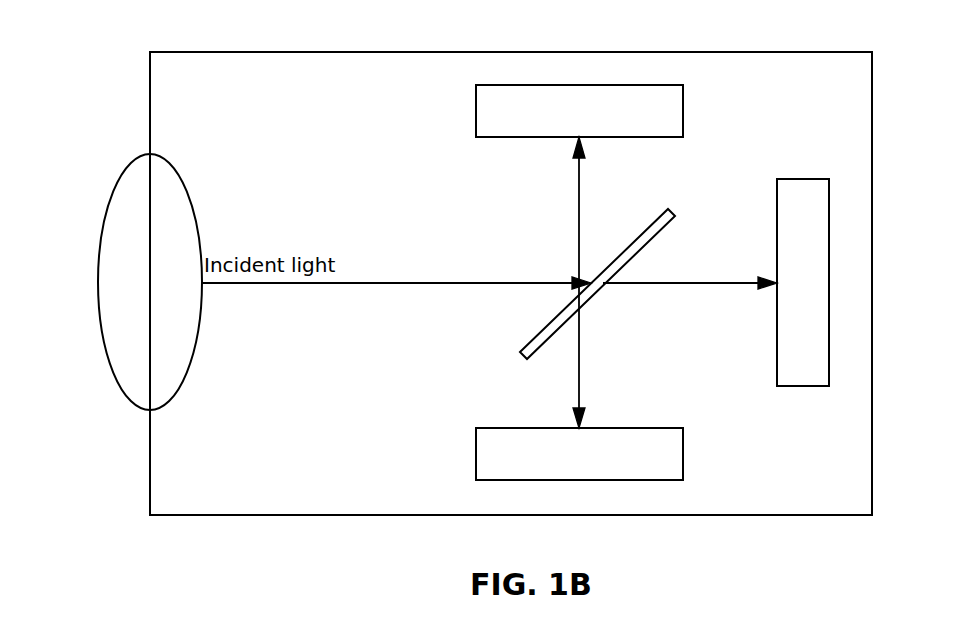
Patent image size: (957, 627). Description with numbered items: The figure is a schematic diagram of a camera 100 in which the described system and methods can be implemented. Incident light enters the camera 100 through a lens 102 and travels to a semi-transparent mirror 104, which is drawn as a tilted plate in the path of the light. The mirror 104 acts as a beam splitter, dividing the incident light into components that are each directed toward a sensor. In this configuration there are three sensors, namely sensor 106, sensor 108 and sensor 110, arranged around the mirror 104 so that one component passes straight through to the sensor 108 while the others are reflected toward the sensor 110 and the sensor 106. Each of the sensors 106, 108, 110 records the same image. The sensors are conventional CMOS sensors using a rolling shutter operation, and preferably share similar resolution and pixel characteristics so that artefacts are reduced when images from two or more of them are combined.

The camera 100 is at (148, 100).
The lens 102 is at (168, 295).
The semi-transparent mirror 104 is at (658, 220).
The sensor 106 is at (598, 466).
The sensor 108 is at (780, 189).
The sensor 110 is at (598, 123).